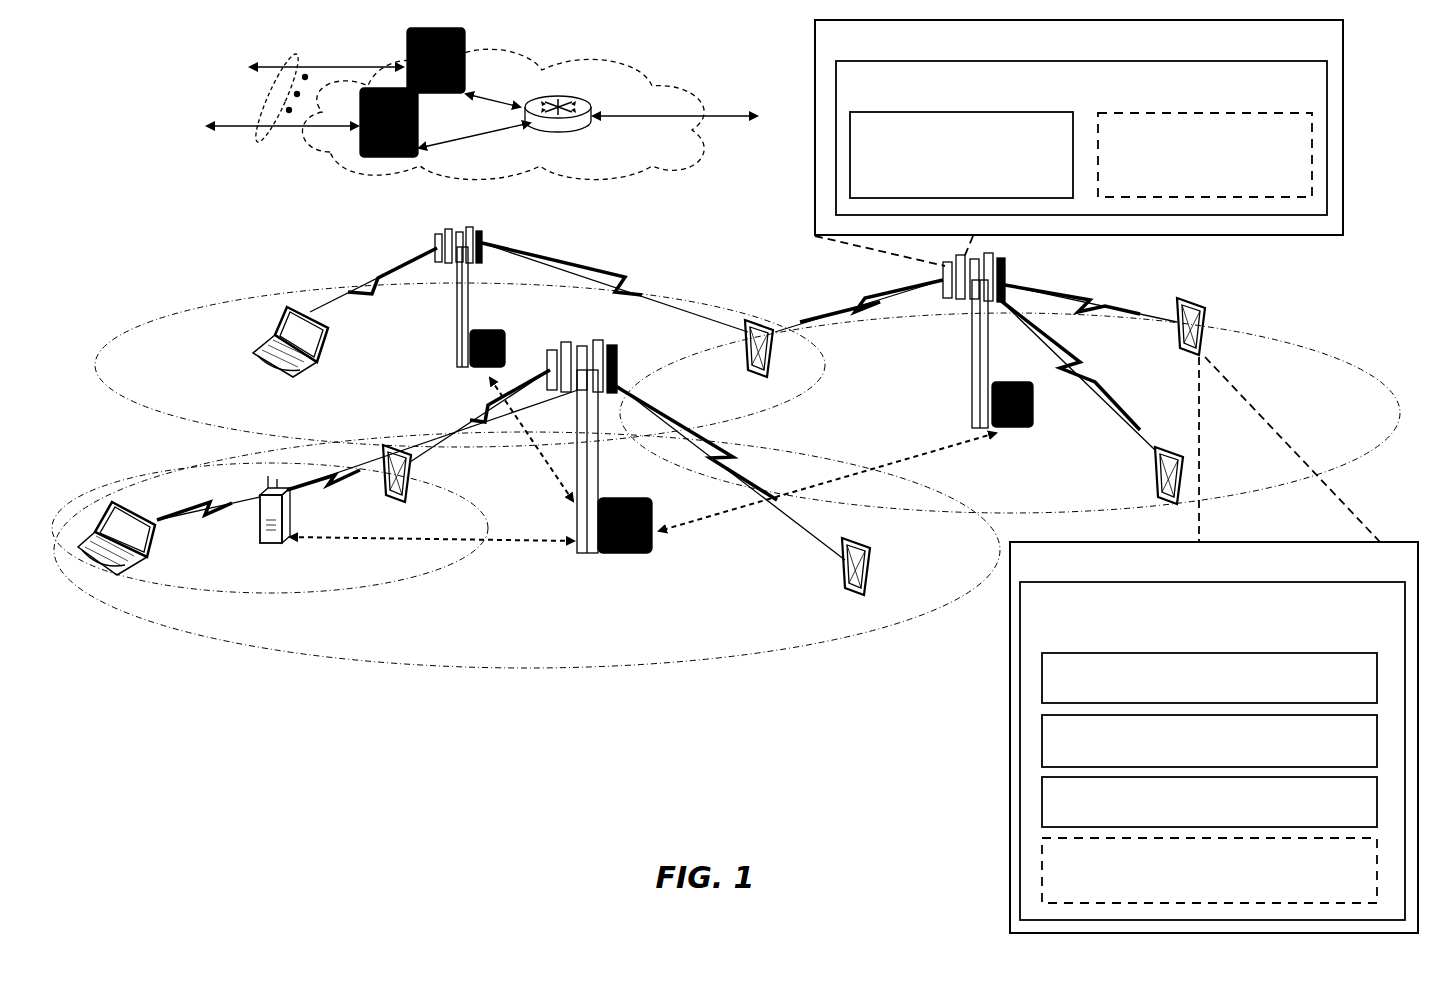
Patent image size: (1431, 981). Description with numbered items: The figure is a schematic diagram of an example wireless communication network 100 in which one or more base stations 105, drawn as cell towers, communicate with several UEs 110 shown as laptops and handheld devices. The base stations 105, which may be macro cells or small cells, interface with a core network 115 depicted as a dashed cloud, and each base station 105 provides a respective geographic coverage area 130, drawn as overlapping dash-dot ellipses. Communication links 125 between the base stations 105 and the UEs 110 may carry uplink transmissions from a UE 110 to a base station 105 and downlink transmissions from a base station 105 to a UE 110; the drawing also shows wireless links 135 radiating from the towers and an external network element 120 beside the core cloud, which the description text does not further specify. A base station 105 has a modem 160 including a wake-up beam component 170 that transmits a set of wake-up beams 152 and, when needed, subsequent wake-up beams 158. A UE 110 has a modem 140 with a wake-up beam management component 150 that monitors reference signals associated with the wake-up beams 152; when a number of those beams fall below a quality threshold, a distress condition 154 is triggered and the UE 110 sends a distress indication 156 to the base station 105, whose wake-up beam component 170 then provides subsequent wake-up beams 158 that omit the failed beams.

The wireless communication network 100 is at (118, 68).
The base station 105 is at (456, 334).
The user equipment (UE) 110 is at (310, 372).
The core network 115 is at (590, 164).
The satellite / external network 120 is at (260, 132).
The communication links 125 is at (545, 462).
The geographic coverage area 130 is at (162, 424).
The communication link 135 is at (374, 274).
The modem 140 is at (1214, 645).
The wake-up beam management component 150 is at (1212, 751).
The wake-up beams 152 is at (1113, 407).
The distress condition 154 is at (1209, 741).
The distress indication 156 is at (1209, 802).
The subsequent wake-up beams 158 is at (1209, 508).
The modem 160 is at (1096, 461).
The wake-up beam component 170 is at (1106, 482).